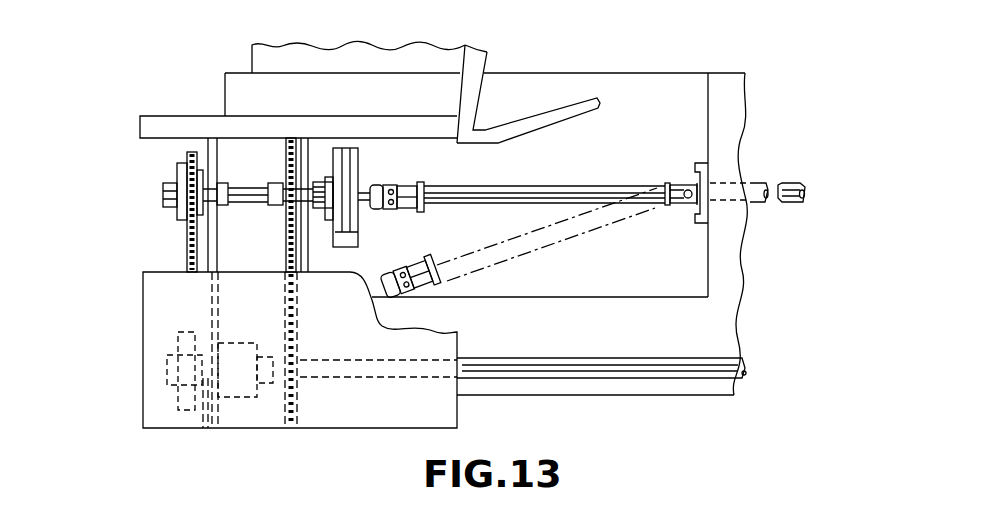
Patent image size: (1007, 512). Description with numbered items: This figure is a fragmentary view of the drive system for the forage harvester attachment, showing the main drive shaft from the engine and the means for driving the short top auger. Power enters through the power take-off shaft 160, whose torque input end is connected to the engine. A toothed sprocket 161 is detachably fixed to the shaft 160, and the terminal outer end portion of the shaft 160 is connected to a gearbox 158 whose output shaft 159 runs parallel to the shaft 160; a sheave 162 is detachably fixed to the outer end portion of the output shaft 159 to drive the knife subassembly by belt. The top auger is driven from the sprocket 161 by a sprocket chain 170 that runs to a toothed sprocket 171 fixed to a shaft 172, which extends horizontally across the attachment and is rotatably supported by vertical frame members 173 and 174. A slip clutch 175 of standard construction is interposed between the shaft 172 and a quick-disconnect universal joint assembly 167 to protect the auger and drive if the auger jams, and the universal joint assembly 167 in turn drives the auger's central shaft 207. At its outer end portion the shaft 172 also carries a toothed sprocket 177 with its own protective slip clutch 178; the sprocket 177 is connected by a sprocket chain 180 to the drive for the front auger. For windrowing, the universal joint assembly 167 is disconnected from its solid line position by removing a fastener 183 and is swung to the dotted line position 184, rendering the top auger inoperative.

The gearbox 158 is at (238, 398).
The output shaft 159 is at (204, 428).
The power take-off shaft 160 is at (692, 360).
The toothed sprocket 161 is at (300, 400).
The sheave 162 is at (175, 343).
The quick-disconnect universal joint assembly 167 is at (538, 186).
The sprocket chain 170 is at (284, 258).
The toothed sprocket 171 is at (282, 158).
The shaft 172 is at (263, 206).
The vertical frame member 173 is at (212, 143).
The vertical frame member 174 is at (298, 258).
The slip clutch 175 is at (358, 182).
The toothed sprocket 177 is at (192, 210).
The slip clutch 178 is at (178, 170).
The sprocket chain 180 is at (183, 247).
The fastener 183 is at (395, 182).
The dotted line position 184 is at (543, 249).
The central shaft 207 is at (795, 183).